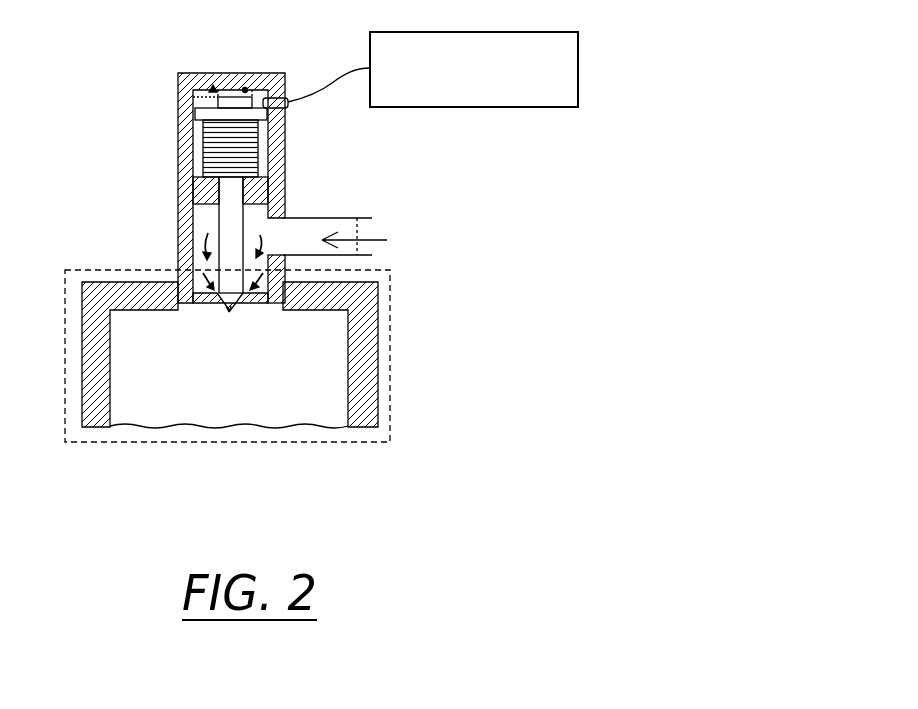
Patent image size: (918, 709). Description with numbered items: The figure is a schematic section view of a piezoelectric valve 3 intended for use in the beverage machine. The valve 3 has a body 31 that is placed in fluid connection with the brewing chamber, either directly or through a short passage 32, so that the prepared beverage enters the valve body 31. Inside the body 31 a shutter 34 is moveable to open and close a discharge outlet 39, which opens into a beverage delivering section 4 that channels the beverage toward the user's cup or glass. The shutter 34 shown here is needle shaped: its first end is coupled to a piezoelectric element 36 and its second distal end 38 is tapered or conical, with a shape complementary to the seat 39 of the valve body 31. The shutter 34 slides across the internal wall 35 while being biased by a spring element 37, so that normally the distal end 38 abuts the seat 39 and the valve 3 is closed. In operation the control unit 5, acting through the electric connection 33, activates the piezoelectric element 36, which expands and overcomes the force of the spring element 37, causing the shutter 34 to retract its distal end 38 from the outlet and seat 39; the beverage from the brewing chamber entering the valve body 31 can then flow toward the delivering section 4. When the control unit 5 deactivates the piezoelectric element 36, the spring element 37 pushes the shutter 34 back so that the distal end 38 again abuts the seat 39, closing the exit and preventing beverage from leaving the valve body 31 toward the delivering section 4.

The piezoelectric valve 3 is at (118, 68).
The beverage delivering section 4 is at (378, 359).
The control unit 5 is at (474, 69).
The valve body 31 is at (177, 237).
The short passage 32 is at (309, 232).
The electric connection 33 is at (332, 82).
The shutter 34 is at (230, 252).
The internal wall 35 is at (198, 180).
The piezoelectric element 36 is at (203, 148).
The spring element 37 is at (212, 87).
The second distal end 38 is at (222, 300).
The discharge outlet / seat 39 is at (226, 308).